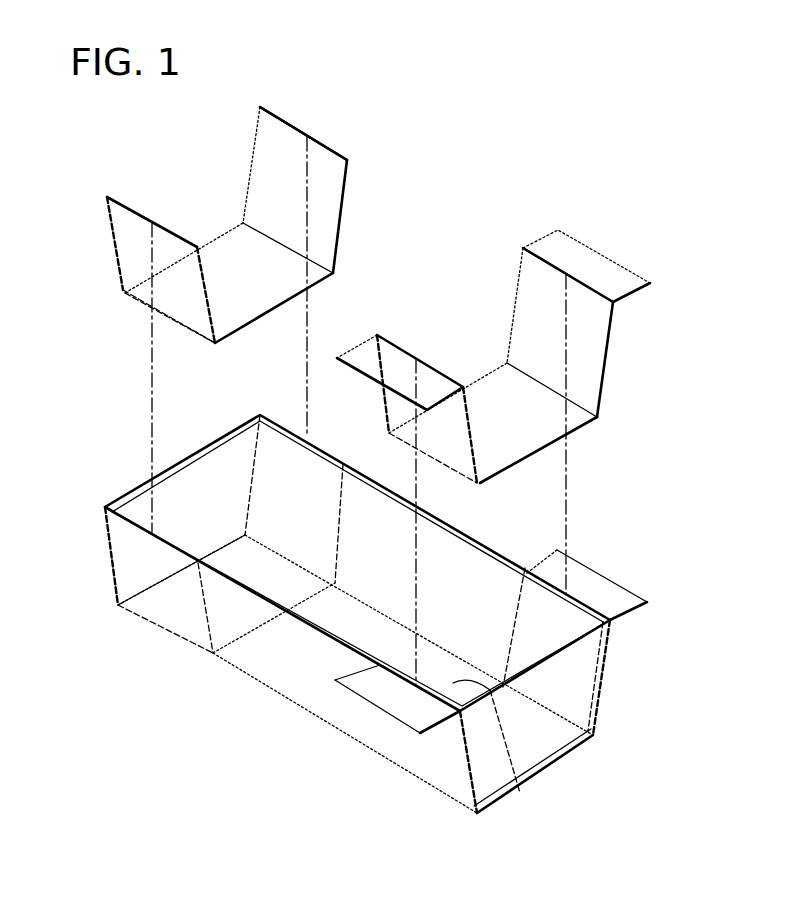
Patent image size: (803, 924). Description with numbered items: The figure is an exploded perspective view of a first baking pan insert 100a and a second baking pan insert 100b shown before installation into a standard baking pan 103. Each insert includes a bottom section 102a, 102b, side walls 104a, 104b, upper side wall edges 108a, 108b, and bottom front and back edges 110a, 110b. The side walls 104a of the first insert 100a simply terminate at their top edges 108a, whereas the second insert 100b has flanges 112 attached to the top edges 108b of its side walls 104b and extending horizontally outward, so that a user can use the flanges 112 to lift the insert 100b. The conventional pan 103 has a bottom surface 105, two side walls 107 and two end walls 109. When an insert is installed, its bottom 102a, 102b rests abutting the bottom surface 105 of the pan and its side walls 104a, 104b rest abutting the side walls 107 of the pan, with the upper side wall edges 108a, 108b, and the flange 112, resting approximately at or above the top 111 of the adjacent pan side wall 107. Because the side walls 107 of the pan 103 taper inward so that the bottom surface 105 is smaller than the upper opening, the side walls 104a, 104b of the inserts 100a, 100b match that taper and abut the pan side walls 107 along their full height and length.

The first baking pan insert 100a is at (338, 115).
The second baking pan insert 100b is at (628, 225).
The bottom section 102a is at (227, 247).
The bottom section 102b is at (493, 383).
The baking pan 103 is at (310, 795).
The side walls 104a is at (262, 173).
The side walls 104b is at (547, 302).
The bottom surface 105 is at (515, 790).
The side walls 107 is at (488, 573).
The upper side wall edges 108a is at (343, 153).
The upper side wall edges 108b is at (602, 282).
The end walls 109 is at (143, 507).
The bottom front and back edges 110a is at (250, 330).
The bottom front and back edges 110b is at (590, 425).
The upper edge of side wall 111 is at (303, 627).
The flanges 112 is at (552, 250).